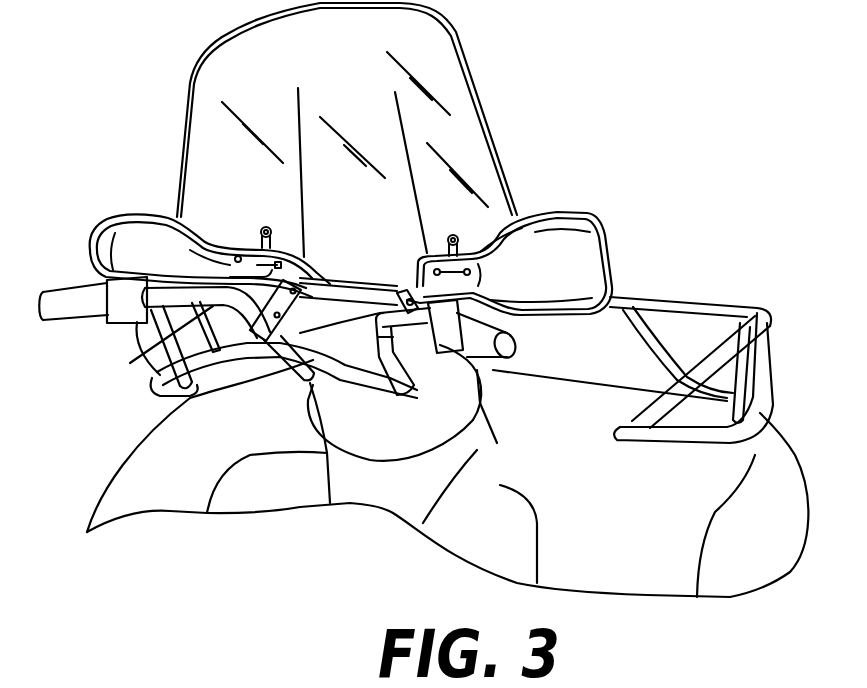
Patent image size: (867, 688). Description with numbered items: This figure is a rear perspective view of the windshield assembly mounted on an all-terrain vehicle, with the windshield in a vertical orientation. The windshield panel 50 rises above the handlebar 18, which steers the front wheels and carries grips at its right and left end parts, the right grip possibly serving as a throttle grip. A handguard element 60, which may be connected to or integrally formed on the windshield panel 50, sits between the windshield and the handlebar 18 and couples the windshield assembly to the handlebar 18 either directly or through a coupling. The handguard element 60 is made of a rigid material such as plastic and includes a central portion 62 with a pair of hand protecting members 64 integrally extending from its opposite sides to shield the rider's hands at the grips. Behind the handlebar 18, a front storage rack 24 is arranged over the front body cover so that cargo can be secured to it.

The handlebar 18 is at (167, 350).
The front storage rack 24 is at (680, 297).
The windshield panel 50 is at (315, 70).
The handguard element 60 is at (575, 284).
The central portion 62 is at (347, 279).
The hand protecting members 64 is at (141, 216).